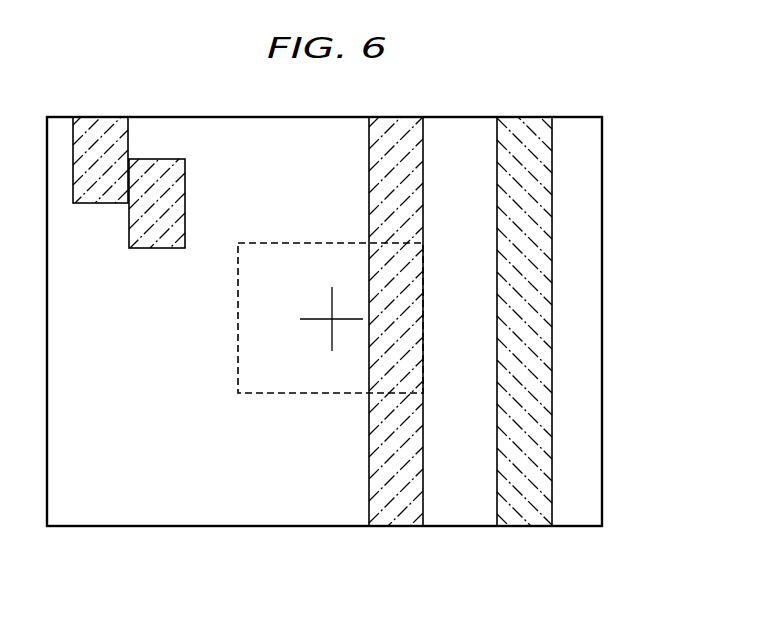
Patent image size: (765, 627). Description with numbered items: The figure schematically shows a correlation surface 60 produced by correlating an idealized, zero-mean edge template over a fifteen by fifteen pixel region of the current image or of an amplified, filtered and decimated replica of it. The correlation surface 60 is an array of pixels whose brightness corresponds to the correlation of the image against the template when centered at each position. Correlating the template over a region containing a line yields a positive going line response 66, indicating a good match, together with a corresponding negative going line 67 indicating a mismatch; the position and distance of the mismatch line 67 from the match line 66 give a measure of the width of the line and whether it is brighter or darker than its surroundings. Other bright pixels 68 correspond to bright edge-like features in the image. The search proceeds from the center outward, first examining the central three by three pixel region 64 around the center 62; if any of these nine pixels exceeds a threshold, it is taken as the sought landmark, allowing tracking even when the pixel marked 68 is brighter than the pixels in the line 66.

The correlation surface 60 is at (540, 117).
The alignment cross mark 62 is at (331, 320).
The central 3 by 3 pixel region 64 is at (236, 365).
The positive going line response 66 is at (423, 190).
The negative going line 67 is at (552, 191).
The bright pixels 68 is at (185, 186).